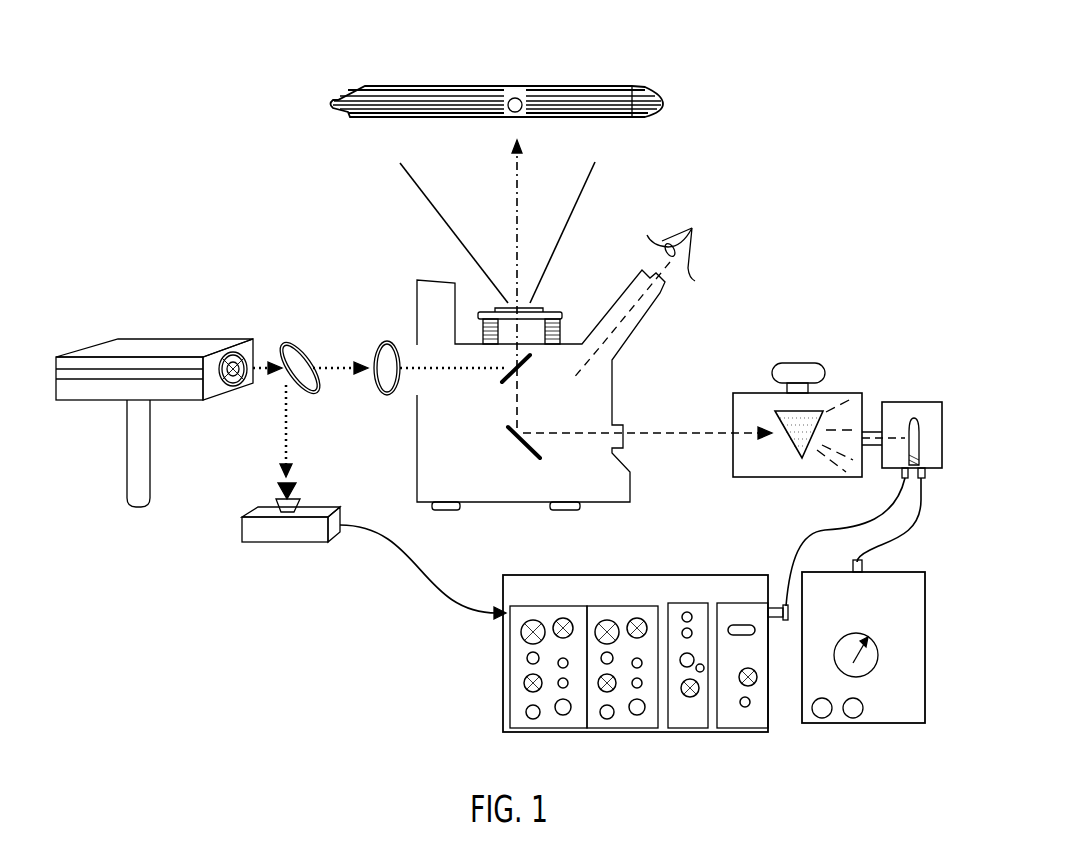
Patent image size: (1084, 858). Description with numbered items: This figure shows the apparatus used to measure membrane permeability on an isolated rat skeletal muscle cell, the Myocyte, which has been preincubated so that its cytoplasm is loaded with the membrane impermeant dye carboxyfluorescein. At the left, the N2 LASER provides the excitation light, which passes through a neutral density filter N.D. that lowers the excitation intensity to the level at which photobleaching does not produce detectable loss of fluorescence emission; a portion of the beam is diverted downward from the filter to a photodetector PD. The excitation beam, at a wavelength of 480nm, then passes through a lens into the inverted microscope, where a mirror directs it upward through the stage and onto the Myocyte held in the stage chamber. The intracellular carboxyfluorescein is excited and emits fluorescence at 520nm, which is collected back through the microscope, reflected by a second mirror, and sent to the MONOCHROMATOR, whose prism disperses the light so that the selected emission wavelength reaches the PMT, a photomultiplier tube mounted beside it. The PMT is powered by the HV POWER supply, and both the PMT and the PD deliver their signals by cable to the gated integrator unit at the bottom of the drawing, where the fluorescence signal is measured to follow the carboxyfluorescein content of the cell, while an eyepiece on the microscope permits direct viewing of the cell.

The myocyte Myocyte is at (527, 84).
The N2 laser N2 LASER is at (154, 402).
The neutral density filter N.D. is at (304, 407).
The 480 nm excitation 480nm is at (379, 400).
The 520 nm emission 520nm is at (601, 289).
The photodetector PD is at (374, 551).
The monochromator MONOCHROMATOR is at (815, 437).
The photomultiplier tube PMT is at (864, 491).
The HV power supply HV POWER is at (863, 641).